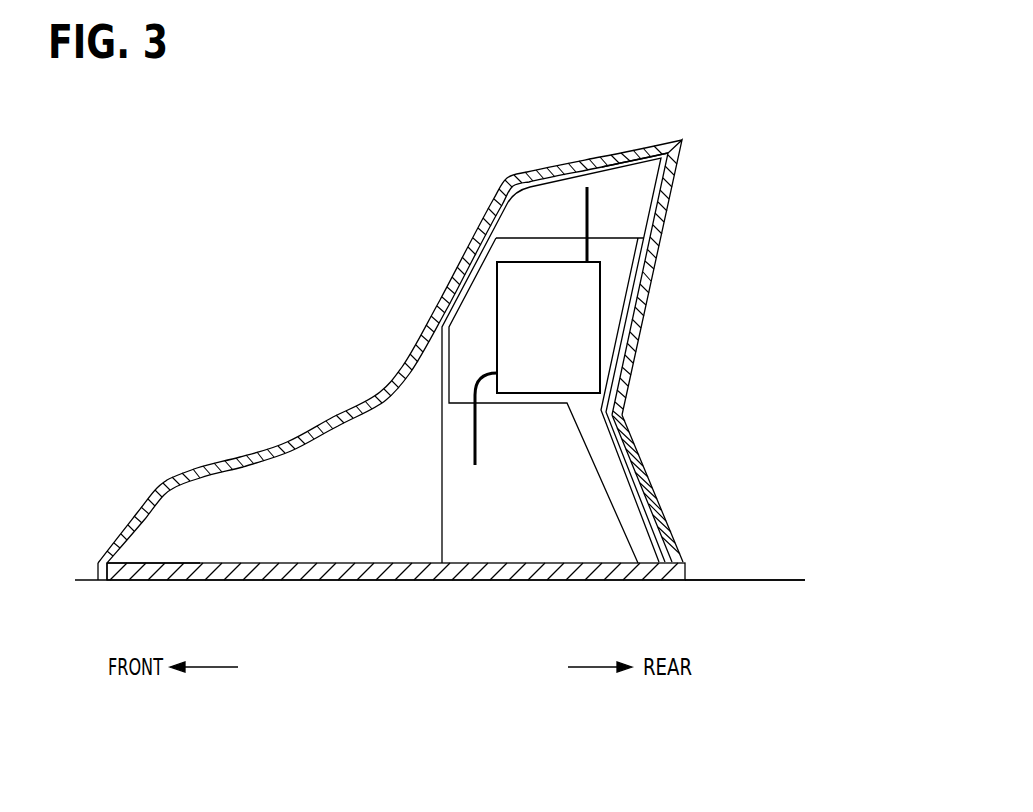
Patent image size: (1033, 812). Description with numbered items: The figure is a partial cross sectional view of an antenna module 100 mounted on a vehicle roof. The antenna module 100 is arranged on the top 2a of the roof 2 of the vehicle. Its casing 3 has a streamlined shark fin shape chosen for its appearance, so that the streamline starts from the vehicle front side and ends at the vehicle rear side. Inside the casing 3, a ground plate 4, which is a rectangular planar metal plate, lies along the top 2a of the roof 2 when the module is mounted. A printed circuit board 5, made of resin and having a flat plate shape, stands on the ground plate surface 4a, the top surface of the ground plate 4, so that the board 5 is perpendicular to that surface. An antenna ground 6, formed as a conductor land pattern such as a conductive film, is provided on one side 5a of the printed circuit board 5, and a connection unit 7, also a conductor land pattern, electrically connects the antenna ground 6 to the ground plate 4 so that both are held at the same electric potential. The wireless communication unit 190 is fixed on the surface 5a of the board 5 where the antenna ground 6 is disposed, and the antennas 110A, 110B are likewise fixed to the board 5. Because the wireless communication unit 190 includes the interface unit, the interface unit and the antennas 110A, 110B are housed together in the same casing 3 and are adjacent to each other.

The antenna module 100 is at (410, 140).
The roof 2 is at (766, 587).
The top 2a is at (722, 578).
The casing 3 is at (158, 480).
The ground plate 4 is at (97, 572).
The ground plate surface 4a is at (168, 563).
The printed circuit board 5 is at (674, 178).
The one side 5a is at (627, 177).
The antenna ground 6 is at (530, 238).
The connection unit 7 is at (623, 462).
The antenna 110A is at (588, 203).
The antenna 110B is at (477, 447).
The wireless communication unit 190 is at (497, 285).